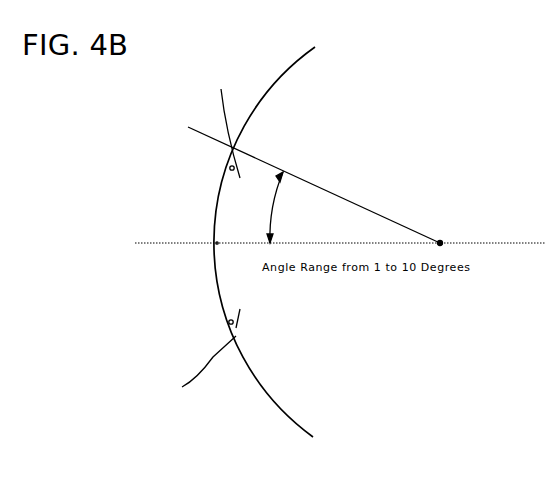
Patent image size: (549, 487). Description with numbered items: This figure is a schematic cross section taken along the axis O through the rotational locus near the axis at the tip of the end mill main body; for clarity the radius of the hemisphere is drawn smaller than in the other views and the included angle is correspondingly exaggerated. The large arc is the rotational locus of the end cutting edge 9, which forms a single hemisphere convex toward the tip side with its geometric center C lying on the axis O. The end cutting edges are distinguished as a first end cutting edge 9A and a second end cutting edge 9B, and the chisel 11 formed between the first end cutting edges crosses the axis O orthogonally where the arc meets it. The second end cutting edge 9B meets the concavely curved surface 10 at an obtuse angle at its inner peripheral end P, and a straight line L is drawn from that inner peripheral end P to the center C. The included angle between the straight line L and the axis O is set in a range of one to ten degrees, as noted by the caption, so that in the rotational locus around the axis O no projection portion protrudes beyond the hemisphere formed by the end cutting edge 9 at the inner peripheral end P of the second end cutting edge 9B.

The end cutting edge 9 is at (221, 246).
The first end cutting edge 9A is at (264, 242).
The second end cutting edge 9B is at (220, 206).
The concavely curved surface 10 is at (231, 169).
The chisel 11 is at (217, 241).
The straight line L is at (313, 183).
The center of the hemisphere C is at (446, 239).
The inner peripheral end P is at (205, 234).
The axis O is at (152, 245).